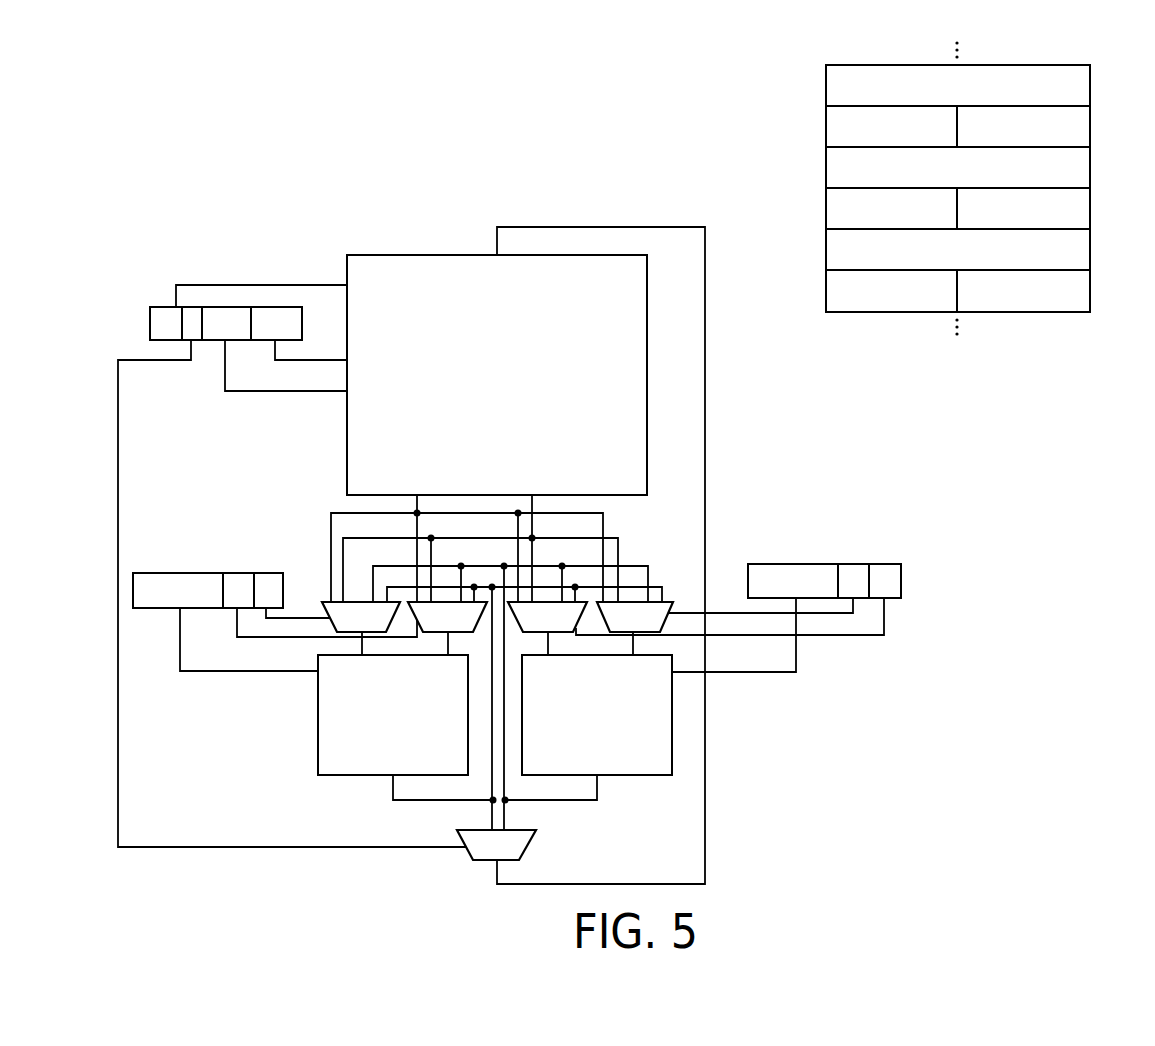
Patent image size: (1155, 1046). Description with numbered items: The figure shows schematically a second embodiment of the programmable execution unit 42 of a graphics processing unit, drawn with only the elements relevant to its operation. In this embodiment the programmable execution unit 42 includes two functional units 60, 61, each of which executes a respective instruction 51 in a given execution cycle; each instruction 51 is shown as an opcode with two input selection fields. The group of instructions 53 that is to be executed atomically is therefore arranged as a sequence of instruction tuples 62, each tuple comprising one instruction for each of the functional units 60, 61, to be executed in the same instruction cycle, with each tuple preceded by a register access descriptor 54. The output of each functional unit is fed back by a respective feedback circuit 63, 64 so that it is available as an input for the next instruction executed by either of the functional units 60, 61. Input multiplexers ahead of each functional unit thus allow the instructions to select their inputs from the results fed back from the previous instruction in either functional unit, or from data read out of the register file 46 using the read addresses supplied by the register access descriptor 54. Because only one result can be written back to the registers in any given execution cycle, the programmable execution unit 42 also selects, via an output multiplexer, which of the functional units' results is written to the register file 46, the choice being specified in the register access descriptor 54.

The programmable execution unit 42 is at (775, 899).
The register file 46 is at (430, 255).
The instruction 51 is at (181, 573).
The group of instructions 53 is at (1061, 373).
The register access descriptor 54 is at (150, 322).
The functional unit 60 is at (318, 748).
The functional unit 61 is at (633, 775).
The instruction tuple 62 is at (826, 129).
The feedback circuit 63 is at (493, 800).
The feedback circuit 64 is at (505, 800).